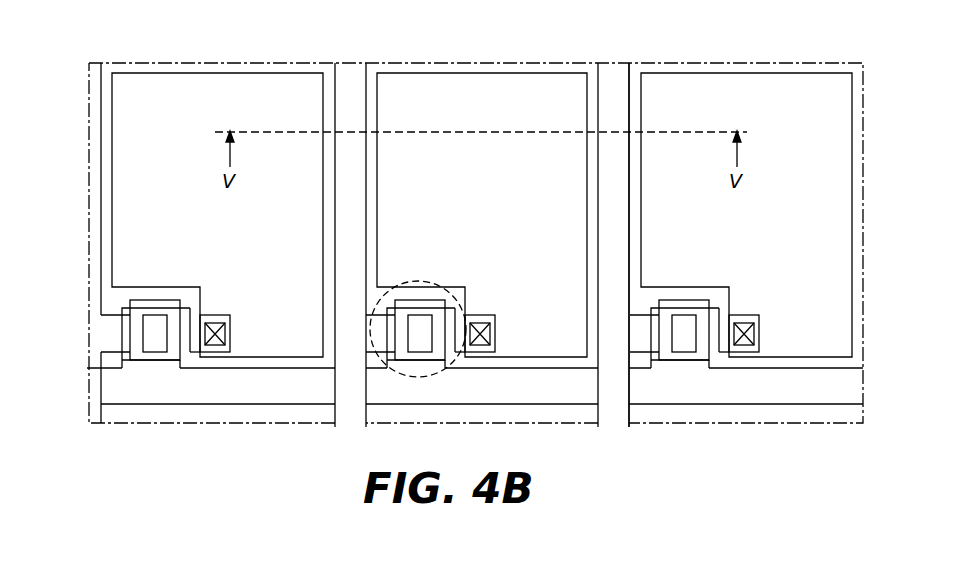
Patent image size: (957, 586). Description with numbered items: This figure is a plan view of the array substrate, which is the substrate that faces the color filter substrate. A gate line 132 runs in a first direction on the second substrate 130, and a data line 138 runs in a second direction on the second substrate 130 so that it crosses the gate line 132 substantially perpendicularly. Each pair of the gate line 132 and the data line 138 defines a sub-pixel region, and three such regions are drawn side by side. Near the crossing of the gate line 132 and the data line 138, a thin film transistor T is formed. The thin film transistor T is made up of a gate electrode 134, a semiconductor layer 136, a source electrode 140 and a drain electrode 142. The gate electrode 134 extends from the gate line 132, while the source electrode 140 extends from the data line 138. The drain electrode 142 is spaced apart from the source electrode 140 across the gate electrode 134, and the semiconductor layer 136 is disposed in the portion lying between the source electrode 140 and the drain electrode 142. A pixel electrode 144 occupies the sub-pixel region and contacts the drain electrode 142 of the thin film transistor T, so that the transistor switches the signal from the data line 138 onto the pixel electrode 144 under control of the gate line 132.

The second substrate 130 is at (88, 333).
The gate line 132 is at (88, 368).
The gate electrode 134 is at (418, 298).
The semiconductor layer 136 is at (438, 308).
The data line 138 is at (366, 427).
The source electrode 140 is at (393, 310).
The drain electrode 142 is at (497, 330).
The pixel electrode 144 is at (528, 360).
The thin film transistor T is at (468, 292).